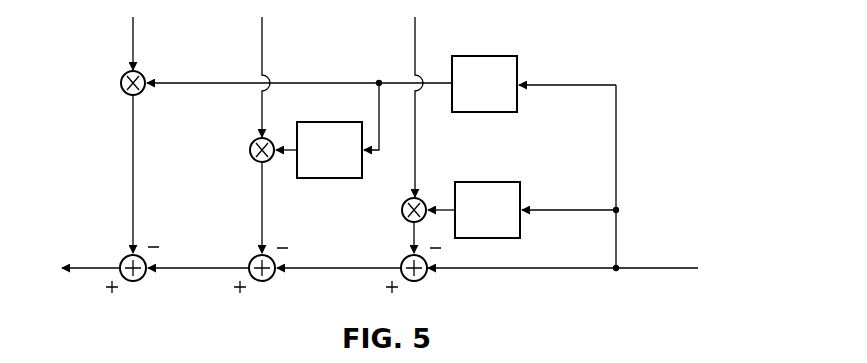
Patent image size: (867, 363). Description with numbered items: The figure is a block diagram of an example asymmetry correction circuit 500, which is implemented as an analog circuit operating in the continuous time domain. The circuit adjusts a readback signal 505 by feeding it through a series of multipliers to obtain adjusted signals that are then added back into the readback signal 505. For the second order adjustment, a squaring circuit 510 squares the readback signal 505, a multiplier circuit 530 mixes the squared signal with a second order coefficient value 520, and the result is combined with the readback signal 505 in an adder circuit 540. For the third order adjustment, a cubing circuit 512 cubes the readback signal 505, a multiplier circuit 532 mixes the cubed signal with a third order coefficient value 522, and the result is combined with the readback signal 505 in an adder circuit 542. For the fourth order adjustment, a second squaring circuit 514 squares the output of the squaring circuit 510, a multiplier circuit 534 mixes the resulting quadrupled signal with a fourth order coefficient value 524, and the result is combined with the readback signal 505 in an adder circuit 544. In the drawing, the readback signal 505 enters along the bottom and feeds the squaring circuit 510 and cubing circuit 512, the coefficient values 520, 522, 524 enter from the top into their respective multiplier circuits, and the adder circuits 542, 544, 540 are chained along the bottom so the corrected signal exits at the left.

The asymmetry correction circuit 500 is at (692, 66).
The readback signal 505 is at (647, 268).
The squaring circuit 510 is at (487, 56).
The cubing circuit 512 is at (490, 182).
The squaring circuit 514 is at (307, 122).
The second order coefficient value 520 is at (134, 34).
The third order coefficient value 522 is at (417, 34).
The fourth order coefficient value 524 is at (264, 34).
The multiplier circuit 530 is at (119, 86).
The multiplier circuit 532 is at (403, 209).
The multiplier circuit 534 is at (249, 152).
The adder circuit 540 is at (140, 278).
The adder circuit 542 is at (420, 280).
The adder circuit 544 is at (268, 280).